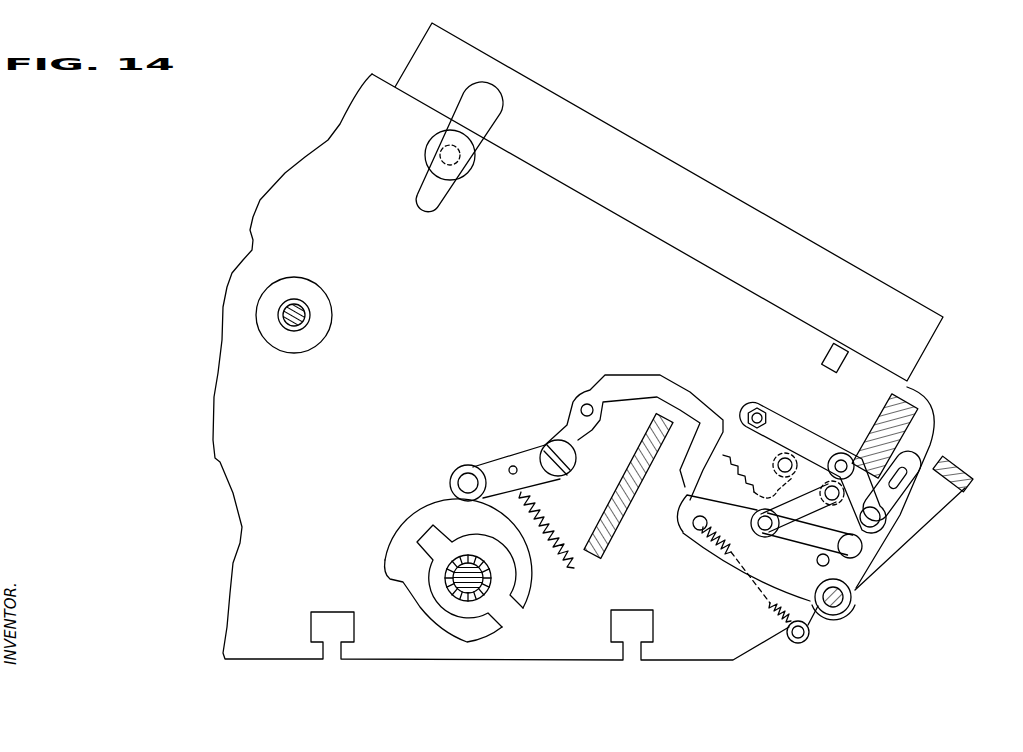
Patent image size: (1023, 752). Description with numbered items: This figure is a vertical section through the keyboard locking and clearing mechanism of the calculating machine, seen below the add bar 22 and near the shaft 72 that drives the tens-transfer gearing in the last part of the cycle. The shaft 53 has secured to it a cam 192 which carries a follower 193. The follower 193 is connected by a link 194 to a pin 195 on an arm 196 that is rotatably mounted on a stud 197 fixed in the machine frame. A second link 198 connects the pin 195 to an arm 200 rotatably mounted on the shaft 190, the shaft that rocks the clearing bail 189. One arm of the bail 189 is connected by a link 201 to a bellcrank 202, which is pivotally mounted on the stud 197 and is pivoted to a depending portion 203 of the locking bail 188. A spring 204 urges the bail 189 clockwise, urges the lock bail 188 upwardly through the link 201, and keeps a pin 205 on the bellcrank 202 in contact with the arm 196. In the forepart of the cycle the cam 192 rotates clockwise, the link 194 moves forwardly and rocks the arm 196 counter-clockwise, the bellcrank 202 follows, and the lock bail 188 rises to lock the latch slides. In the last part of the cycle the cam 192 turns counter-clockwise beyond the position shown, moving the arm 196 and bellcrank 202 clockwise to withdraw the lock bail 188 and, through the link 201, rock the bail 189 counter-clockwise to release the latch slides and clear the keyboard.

The add bar 22 is at (712, 192).
The shaft 72 is at (306, 315).
The shaft 53 is at (455, 580).
The locking bail 188 is at (907, 453).
The bail 189 is at (948, 477).
The shaft 190 is at (845, 615).
The cam 192 is at (400, 549).
The follower 193 is at (495, 466).
The link 194 is at (631, 382).
The pin 195 is at (697, 494).
The arm 196 is at (778, 538).
The stud 197 is at (783, 447).
The link 198 is at (753, 580).
The arm 200 is at (844, 571).
The link 201 is at (824, 458).
The bellcrank 202 is at (808, 488).
The depending portion 203 is at (887, 498).
The spring 204 is at (771, 613).
The pin 205 is at (757, 474).